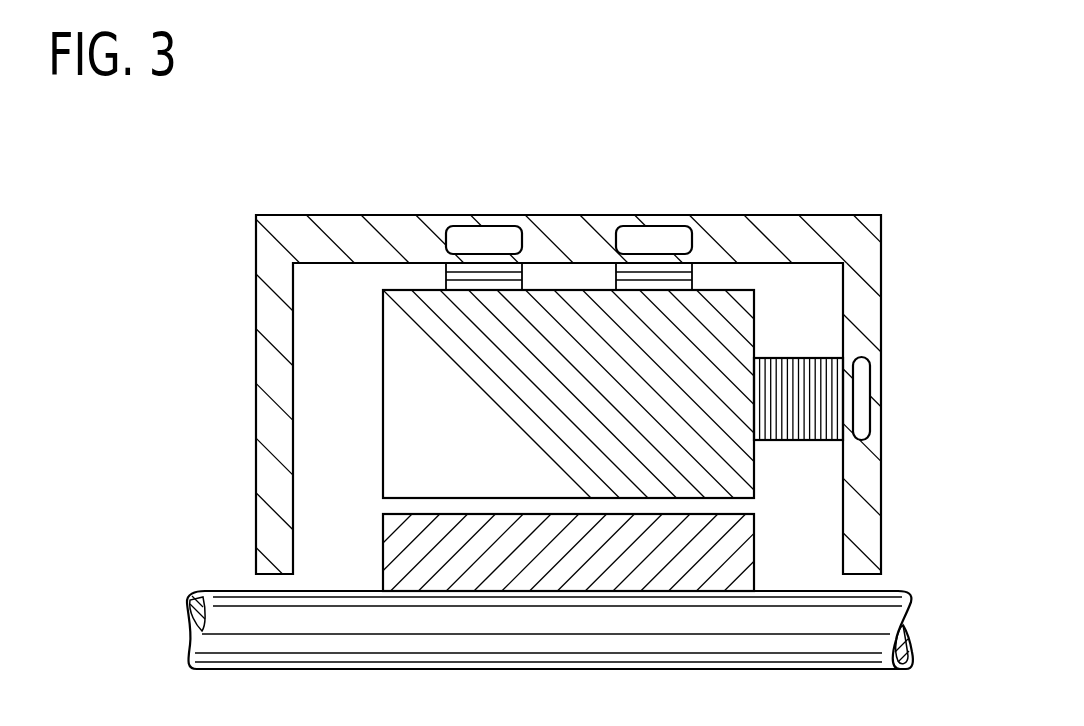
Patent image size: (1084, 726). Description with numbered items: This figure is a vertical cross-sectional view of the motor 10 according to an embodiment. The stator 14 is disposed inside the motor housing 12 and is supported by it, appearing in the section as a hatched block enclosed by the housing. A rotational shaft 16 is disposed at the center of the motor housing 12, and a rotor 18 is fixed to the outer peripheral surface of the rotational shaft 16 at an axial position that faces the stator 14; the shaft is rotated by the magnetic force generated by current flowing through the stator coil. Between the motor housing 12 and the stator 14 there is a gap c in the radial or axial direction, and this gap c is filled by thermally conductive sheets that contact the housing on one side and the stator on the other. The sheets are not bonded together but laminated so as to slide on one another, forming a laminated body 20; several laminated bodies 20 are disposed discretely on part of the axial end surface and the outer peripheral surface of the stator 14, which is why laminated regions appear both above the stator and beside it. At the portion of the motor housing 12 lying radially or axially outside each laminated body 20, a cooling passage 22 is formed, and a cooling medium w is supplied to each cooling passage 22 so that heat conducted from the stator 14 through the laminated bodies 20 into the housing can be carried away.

The motor 10 is at (585, 83).
The motor housing 12 is at (738, 215).
The stator 14 is at (742, 335).
The rotational shaft 16 is at (890, 590).
The rotor 18 is at (738, 533).
The laminated body 20 is at (693, 273).
The cooling passage 22 is at (650, 230).
The cooling medium w is at (493, 238).
The gap c is at (562, 282).